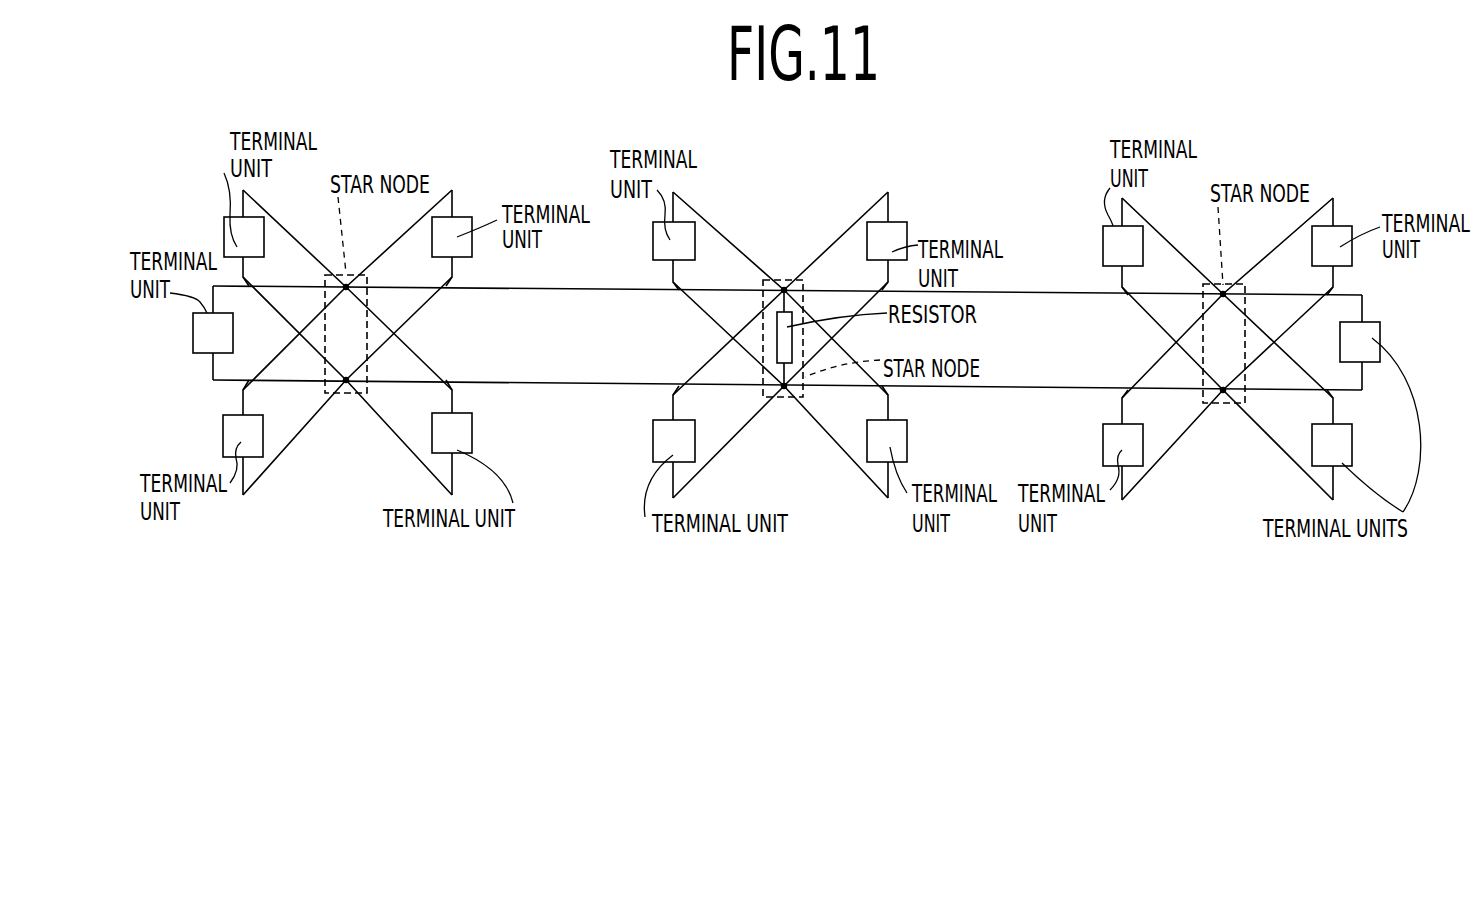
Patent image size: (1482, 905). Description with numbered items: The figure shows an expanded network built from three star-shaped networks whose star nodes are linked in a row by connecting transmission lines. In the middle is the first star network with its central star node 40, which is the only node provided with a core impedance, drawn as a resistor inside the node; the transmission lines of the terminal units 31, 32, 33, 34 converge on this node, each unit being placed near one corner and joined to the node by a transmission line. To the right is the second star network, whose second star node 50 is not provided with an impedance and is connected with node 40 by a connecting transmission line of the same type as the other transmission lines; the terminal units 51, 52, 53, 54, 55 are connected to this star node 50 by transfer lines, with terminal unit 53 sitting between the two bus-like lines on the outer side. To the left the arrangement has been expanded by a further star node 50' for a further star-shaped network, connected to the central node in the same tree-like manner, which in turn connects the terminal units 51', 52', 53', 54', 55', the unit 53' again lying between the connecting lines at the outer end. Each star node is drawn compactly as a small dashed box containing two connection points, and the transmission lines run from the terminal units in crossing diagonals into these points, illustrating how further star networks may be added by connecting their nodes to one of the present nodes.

The terminal unit 31 is at (670, 240).
The terminal unit 32 is at (907, 237).
The terminal unit 33 is at (897, 435).
The terminal unit 34 is at (667, 443).
The star node 40 is at (785, 398).
The second star node 50 is at (1224, 364).
The terminal unit 51 is at (1110, 246).
The terminal unit 52 is at (1343, 232).
The terminal unit 53 is at (1367, 360).
The terminal unit 54 is at (1347, 445).
The terminal unit 55 is at (1108, 445).
The further star node 50' is at (347, 356).
The terminal unit 51' is at (233, 237).
The terminal unit 52' is at (466, 224).
The terminal unit 53' is at (186, 345).
The terminal unit 54' is at (469, 433).
The terminal unit 55' is at (229, 436).